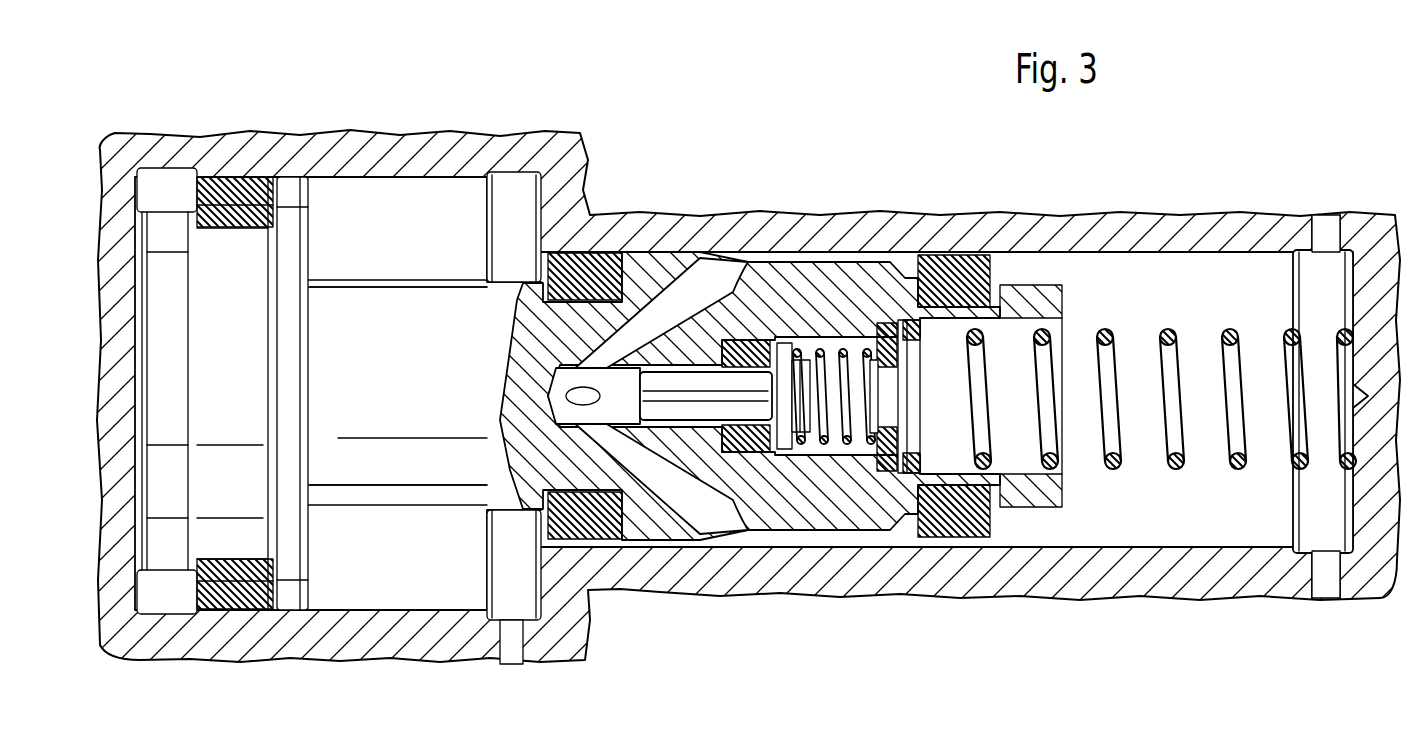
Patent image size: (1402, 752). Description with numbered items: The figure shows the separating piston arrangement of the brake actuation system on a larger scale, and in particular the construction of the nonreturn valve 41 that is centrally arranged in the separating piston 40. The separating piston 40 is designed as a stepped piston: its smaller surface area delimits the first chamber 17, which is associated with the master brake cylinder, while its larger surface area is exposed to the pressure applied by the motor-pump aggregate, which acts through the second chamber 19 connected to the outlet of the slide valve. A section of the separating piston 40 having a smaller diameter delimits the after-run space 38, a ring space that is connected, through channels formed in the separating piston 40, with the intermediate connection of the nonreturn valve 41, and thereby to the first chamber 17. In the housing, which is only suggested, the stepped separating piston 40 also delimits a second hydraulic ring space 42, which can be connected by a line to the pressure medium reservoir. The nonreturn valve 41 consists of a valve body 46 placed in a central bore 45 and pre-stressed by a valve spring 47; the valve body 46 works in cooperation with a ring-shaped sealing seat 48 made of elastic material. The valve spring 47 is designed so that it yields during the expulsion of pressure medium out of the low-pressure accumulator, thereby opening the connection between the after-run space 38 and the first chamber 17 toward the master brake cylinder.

The first chamber 17 is at (1172, 283).
The second chamber 19 is at (165, 597).
The after-run space 38 is at (740, 273).
The separating piston 40 is at (470, 325).
The nonreturn valve 41 is at (820, 388).
The second hydraulic ring space 42 is at (503, 597).
The central bore 45 is at (623, 497).
The valve body 46 is at (815, 440).
The valve spring 47 is at (856, 418).
The sealing seat 48 is at (755, 460).